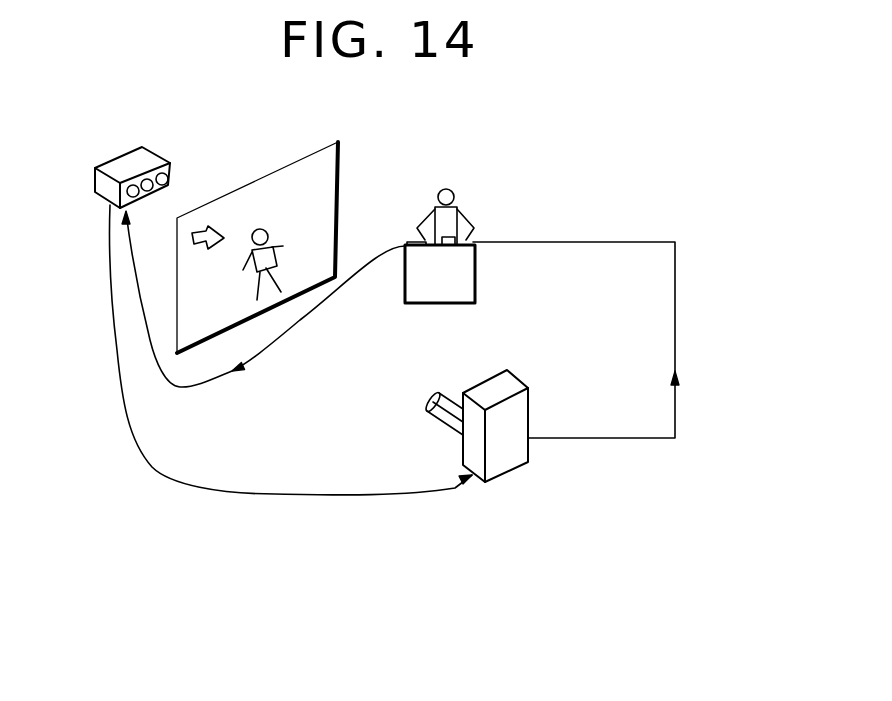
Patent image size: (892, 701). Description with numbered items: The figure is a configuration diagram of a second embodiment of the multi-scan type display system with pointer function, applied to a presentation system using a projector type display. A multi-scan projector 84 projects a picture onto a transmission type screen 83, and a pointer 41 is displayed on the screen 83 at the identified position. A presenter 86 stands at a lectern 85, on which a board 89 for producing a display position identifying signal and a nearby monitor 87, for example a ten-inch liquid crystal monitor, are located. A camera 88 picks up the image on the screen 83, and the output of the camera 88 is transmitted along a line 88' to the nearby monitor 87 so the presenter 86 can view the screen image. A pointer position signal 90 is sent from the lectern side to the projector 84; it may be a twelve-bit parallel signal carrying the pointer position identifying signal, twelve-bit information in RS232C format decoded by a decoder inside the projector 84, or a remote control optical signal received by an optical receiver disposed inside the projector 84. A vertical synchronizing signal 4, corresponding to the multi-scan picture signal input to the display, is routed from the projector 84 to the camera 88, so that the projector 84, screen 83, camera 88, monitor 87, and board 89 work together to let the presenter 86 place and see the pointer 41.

The vertical synchronizing signal VD 4 is at (275, 494).
The pointer 41 is at (202, 250).
The transmission type screen 83 is at (340, 160).
The multi-scan projector 84 is at (165, 158).
The lectern 85 is at (428, 303).
The presenter 86 is at (455, 192).
The monitor 87 is at (447, 247).
The camera 88 is at (507, 426).
The camera video signal line 88' is at (610, 340).
The board for producing a display position identifying signal 89 is at (413, 238).
The pointer position signal 90 is at (263, 355).